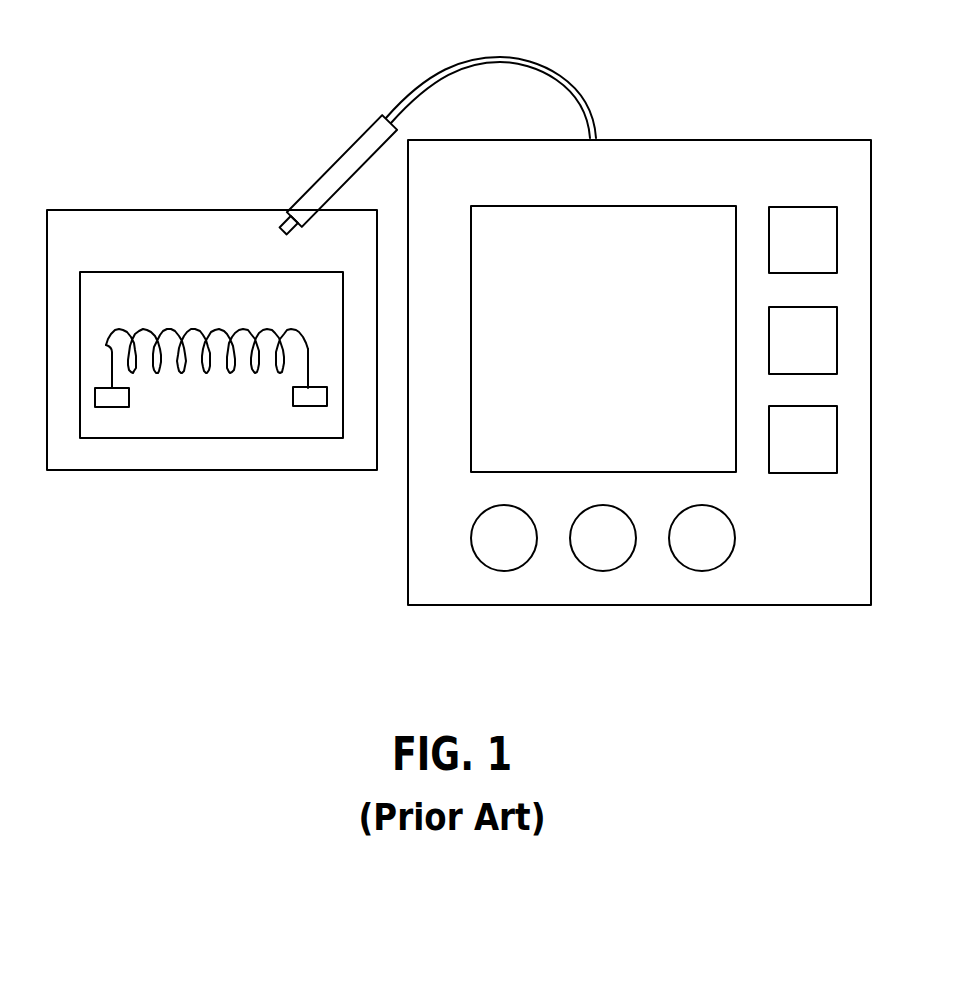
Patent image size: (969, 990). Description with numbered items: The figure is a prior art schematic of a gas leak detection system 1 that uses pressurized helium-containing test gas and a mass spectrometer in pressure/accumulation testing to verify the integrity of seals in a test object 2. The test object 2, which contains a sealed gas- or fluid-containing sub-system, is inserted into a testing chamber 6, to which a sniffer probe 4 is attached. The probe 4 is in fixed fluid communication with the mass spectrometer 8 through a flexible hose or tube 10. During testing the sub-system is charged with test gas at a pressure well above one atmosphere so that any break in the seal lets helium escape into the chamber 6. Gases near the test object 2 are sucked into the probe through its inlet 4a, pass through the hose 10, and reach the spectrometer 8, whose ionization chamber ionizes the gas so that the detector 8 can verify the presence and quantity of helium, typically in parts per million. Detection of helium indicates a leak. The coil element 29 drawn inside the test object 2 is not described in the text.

The gas leak detection system 1 is at (191, 90).
The test object 2 is at (80, 302).
The sniffer probe 4 is at (357, 150).
The inlet 4a is at (284, 230).
The testing chamber 6 is at (70, 210).
The mass spectrometer 8 is at (831, 140).
The flexible hose or tube 10 is at (577, 95).
The coil 29 is at (308, 348).